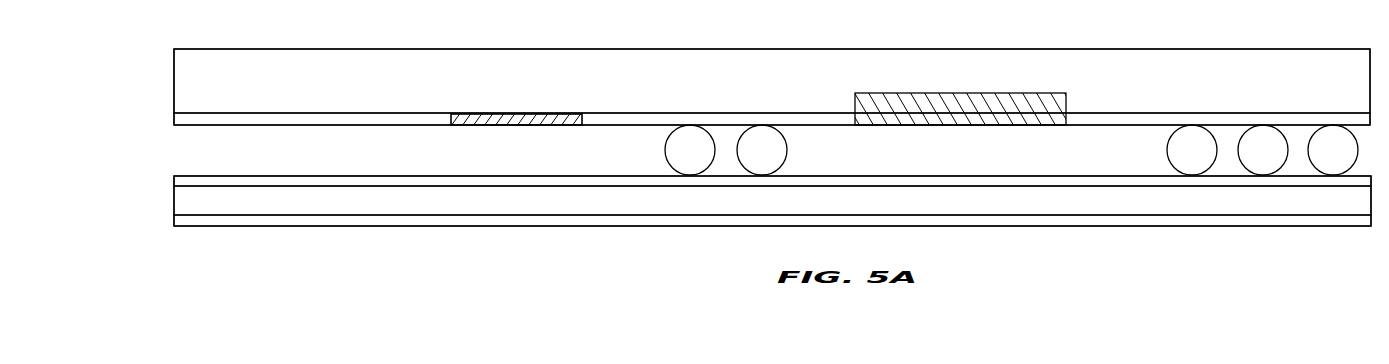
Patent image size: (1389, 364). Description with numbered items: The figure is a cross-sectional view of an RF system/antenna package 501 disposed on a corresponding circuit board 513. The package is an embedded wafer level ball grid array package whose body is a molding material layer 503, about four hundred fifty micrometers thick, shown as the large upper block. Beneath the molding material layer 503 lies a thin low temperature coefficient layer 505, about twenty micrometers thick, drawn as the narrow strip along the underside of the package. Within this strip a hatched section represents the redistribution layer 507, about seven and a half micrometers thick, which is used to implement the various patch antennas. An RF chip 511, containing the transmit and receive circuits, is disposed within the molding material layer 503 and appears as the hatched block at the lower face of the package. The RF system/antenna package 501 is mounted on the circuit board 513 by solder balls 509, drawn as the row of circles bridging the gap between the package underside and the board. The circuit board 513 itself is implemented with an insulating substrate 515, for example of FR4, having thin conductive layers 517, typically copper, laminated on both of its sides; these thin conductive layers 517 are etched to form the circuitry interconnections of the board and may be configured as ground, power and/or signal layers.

The RF system/antenna package 501 is at (165, 89).
The molding material layer 503 is at (772, 81).
The low temperature coefficient layer 505 is at (287, 127).
The redistribution layer 507 is at (512, 127).
The solder balls 509 is at (666, 152).
The RF chip 511 is at (938, 126).
The circuit board 513 is at (167, 213).
The insulating substrate 515 is at (772, 200).
The thin conductive layers 517 is at (388, 183).